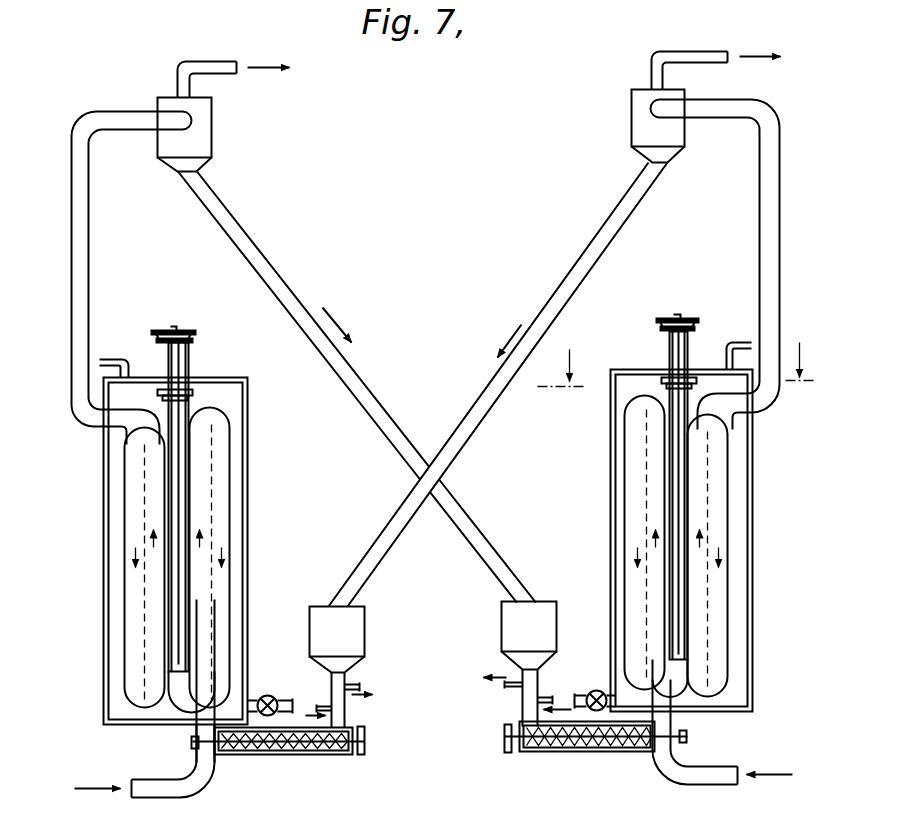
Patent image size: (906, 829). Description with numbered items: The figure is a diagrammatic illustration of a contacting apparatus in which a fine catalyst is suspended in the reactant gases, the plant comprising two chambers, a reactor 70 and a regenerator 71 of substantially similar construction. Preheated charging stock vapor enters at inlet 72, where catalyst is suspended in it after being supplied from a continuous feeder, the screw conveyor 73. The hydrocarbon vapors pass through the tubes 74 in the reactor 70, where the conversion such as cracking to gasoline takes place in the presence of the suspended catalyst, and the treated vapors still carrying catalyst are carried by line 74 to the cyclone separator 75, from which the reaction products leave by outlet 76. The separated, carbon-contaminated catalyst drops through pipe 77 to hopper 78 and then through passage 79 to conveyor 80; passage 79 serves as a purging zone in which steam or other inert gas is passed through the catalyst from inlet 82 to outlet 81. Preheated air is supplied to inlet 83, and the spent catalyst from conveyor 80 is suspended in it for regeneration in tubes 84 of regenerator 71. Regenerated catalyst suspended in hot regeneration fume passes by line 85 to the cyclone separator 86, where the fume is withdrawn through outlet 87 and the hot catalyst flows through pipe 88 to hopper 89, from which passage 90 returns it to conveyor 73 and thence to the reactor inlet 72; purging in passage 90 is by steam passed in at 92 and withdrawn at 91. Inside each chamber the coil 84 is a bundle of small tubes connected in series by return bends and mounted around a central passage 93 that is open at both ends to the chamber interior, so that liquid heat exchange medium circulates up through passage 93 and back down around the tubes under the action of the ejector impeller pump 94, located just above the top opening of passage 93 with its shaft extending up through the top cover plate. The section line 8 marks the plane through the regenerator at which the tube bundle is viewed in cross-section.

The section line 8 is at (678, 365).
The reactor 70 is at (236, 508).
The regenerator 71 is at (612, 519).
The inlet 72 is at (180, 796).
The screw conveyor 73 is at (281, 756).
The tubes 74 is at (92, 277).
The cyclone separator 75 is at (208, 132).
The outlet 76 is at (218, 62).
The pipe 77 is at (358, 376).
The hopper 78 is at (506, 638).
The passage 79 is at (530, 701).
The conveyor 80 is at (569, 752).
The outlet 81 is at (505, 686).
The inlet 82 is at (551, 699).
The inlet 83 is at (697, 785).
The tubes 84 is at (640, 583).
The line 85 is at (765, 267).
The cyclone separator 86 is at (636, 117).
The outlet 87 is at (695, 52).
The pipe 88 is at (549, 304).
The hopper 89 is at (357, 644).
The passage 90 is at (347, 711).
The steam withdrawal 91 is at (361, 690).
The steam inlet 92 is at (323, 705).
The central passage 93 is at (185, 457).
The ejector impeller pump 94 is at (183, 392).